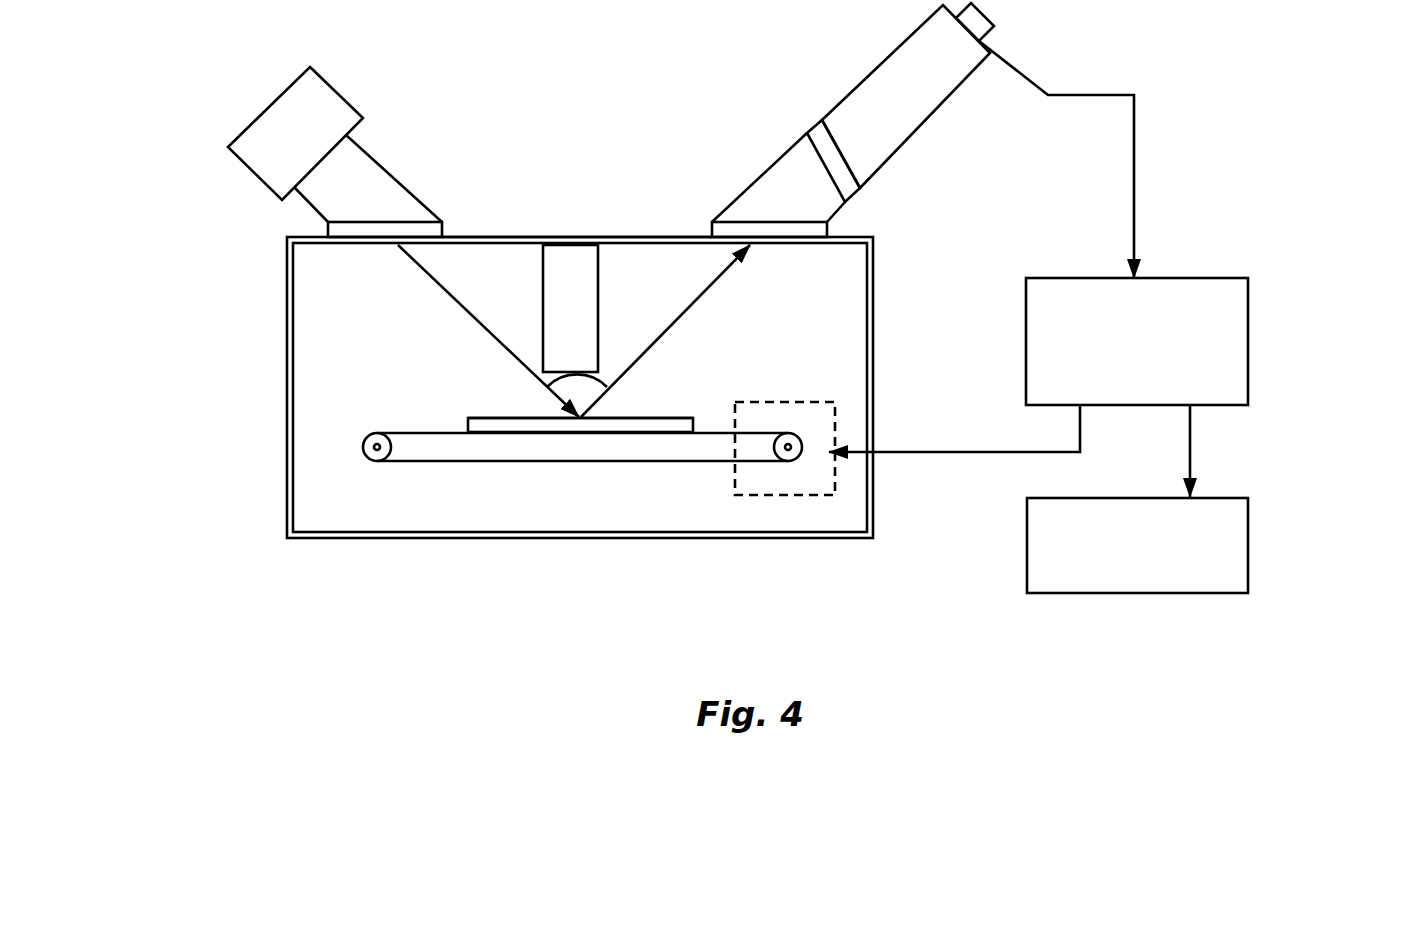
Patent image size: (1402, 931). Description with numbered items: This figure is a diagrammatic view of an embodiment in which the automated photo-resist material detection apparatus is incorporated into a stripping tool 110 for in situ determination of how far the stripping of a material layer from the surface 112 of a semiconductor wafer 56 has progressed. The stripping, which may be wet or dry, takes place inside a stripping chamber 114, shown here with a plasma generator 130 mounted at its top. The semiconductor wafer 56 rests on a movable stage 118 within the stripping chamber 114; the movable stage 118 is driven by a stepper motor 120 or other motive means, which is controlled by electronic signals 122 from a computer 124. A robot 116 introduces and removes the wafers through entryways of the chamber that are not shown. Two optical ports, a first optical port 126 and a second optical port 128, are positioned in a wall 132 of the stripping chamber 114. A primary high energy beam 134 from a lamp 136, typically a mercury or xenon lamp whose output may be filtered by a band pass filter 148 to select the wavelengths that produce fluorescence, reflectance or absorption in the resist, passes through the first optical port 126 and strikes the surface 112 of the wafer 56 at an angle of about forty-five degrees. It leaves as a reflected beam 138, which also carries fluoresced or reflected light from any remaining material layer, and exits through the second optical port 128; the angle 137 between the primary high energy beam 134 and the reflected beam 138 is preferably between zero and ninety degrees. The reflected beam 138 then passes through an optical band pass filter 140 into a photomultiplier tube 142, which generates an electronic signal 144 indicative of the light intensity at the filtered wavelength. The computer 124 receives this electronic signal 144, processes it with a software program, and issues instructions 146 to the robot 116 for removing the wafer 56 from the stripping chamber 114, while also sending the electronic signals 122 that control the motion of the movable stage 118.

The stripping tool 110 is at (243, 457).
The stripping chamber 114 is at (358, 542).
The wall 132 is at (510, 237).
The lamp 136 is at (322, 92).
The band pass filter 148 is at (348, 148).
The first optical port 126 is at (443, 232).
The second optical port 128 is at (713, 232).
The optical band pass filter 140 is at (793, 147).
The photomultiplier tube 142 is at (903, 137).
The electronic signal 144 is at (1134, 168).
The computer 124 is at (1250, 348).
The robot 116 is at (1250, 538).
The instructions 146 is at (1190, 452).
The electronic signals 122 is at (965, 452).
The primary high energy beam 134 is at (428, 273).
The reflected beam 138 is at (690, 302).
The plasma generator 130 is at (592, 247).
The angle 137 is at (593, 378).
The surface 112 is at (483, 417).
The semiconductor wafer 56 is at (512, 425).
The movable stage 118 is at (398, 432).
The stepper motor 120 is at (792, 497).